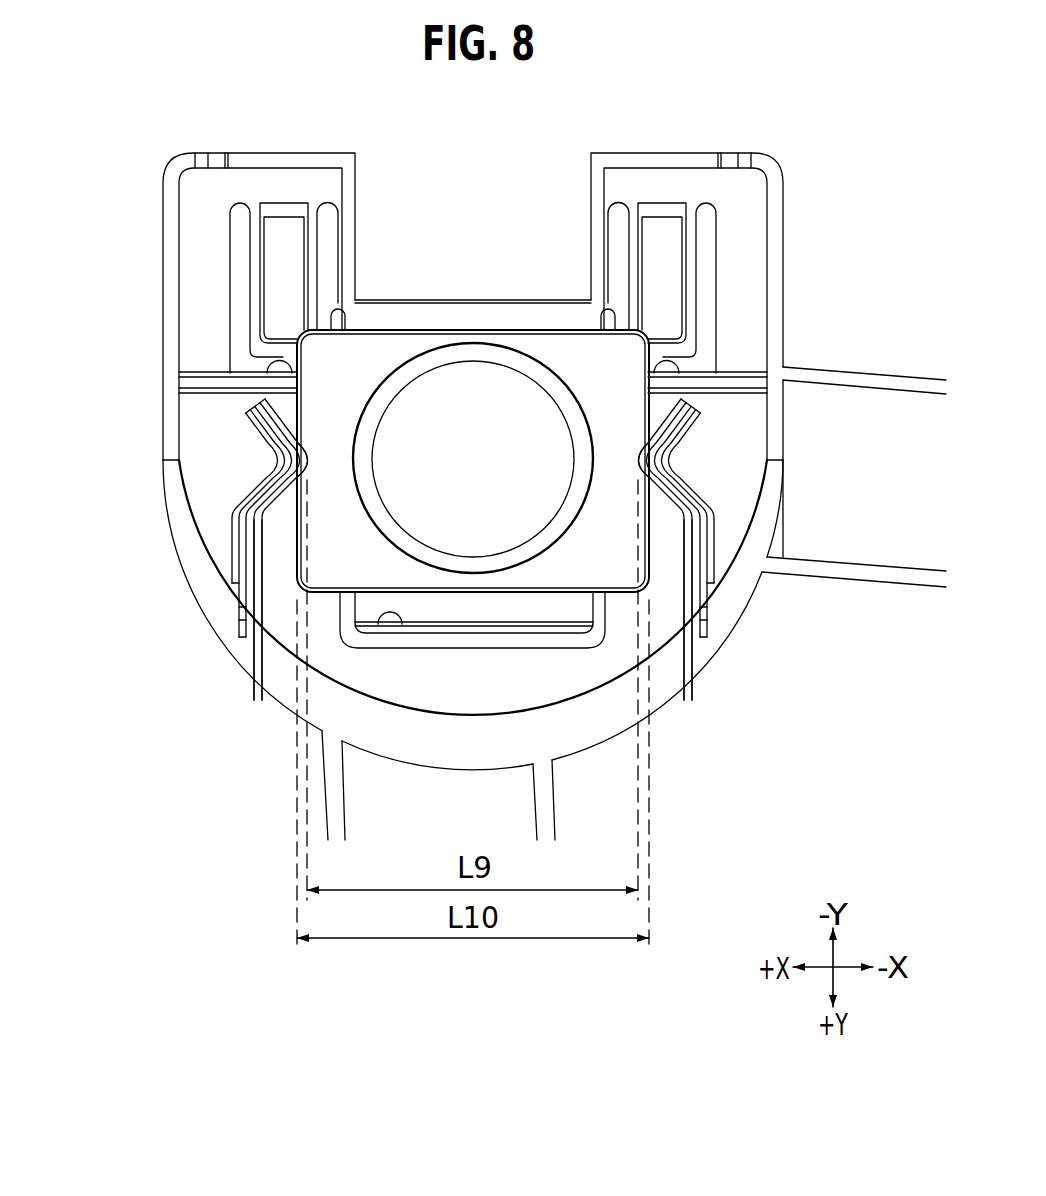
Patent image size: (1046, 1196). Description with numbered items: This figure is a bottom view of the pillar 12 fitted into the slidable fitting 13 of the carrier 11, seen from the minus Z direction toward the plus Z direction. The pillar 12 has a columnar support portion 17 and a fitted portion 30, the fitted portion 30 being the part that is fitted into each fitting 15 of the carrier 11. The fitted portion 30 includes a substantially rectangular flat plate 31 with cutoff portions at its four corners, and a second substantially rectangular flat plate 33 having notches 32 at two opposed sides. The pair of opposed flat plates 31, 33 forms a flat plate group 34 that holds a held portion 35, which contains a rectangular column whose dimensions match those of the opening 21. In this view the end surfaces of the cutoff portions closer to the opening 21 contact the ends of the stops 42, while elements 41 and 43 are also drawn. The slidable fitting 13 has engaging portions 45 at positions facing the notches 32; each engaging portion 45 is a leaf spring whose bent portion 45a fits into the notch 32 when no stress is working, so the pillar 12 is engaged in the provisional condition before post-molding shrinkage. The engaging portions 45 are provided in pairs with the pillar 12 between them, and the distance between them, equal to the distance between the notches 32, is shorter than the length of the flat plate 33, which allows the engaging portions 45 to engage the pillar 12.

The carrier 11 is at (845, 371).
The pillar 12 is at (425, 630).
The slidable fitting 13 is at (426, 461).
The fitting 15 is at (172, 624).
The support portion 17 is at (570, 390).
The opening 21 is at (530, 148).
The fitted portion 30 is at (523, 607).
The flat plate 31 is at (498, 300).
The notch 32 is at (288, 503).
The flat plate 33 is at (618, 580).
The flat plate group 34 is at (483, 487).
The held portion 35 is at (423, 326).
The first elastic piece 41 is at (474, 273).
The stop 42 is at (283, 258).
The projection 43 is at (388, 640).
The engaging portion 45 is at (474, 549).
The bent portion 45a is at (308, 462).